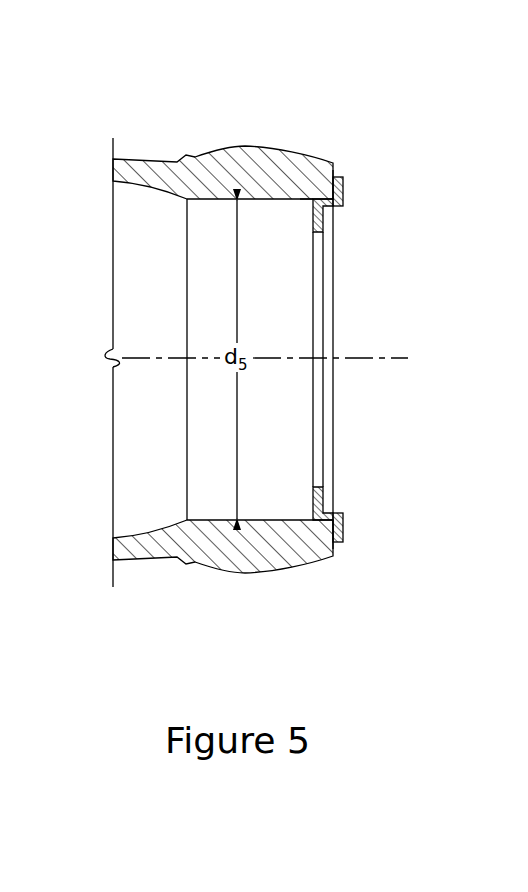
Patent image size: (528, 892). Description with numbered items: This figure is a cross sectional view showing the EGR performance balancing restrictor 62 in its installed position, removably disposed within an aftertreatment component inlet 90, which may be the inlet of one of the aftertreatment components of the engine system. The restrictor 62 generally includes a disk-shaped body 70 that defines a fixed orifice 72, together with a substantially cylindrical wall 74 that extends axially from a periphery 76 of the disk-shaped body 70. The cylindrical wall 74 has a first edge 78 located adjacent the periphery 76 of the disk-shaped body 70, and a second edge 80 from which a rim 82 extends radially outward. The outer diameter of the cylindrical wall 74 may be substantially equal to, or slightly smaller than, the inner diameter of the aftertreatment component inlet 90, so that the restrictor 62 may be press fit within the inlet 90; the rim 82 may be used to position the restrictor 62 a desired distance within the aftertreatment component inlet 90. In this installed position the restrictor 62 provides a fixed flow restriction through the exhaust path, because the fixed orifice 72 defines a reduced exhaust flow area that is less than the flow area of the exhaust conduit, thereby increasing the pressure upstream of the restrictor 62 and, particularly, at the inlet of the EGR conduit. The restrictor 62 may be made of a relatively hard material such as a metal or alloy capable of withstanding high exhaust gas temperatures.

The aftertreatment component inlet 90 is at (300, 133).
The EGR performance balancing restrictor 62 is at (348, 205).
The rim 82 is at (346, 526).
The disk-shaped body 70 is at (323, 227).
The cylindrical wall 74 is at (328, 511).
The fixed orifice 72 is at (334, 333).
The first edge 78 is at (322, 191).
The periphery 76 is at (304, 207).
The second edge 80 is at (328, 530).